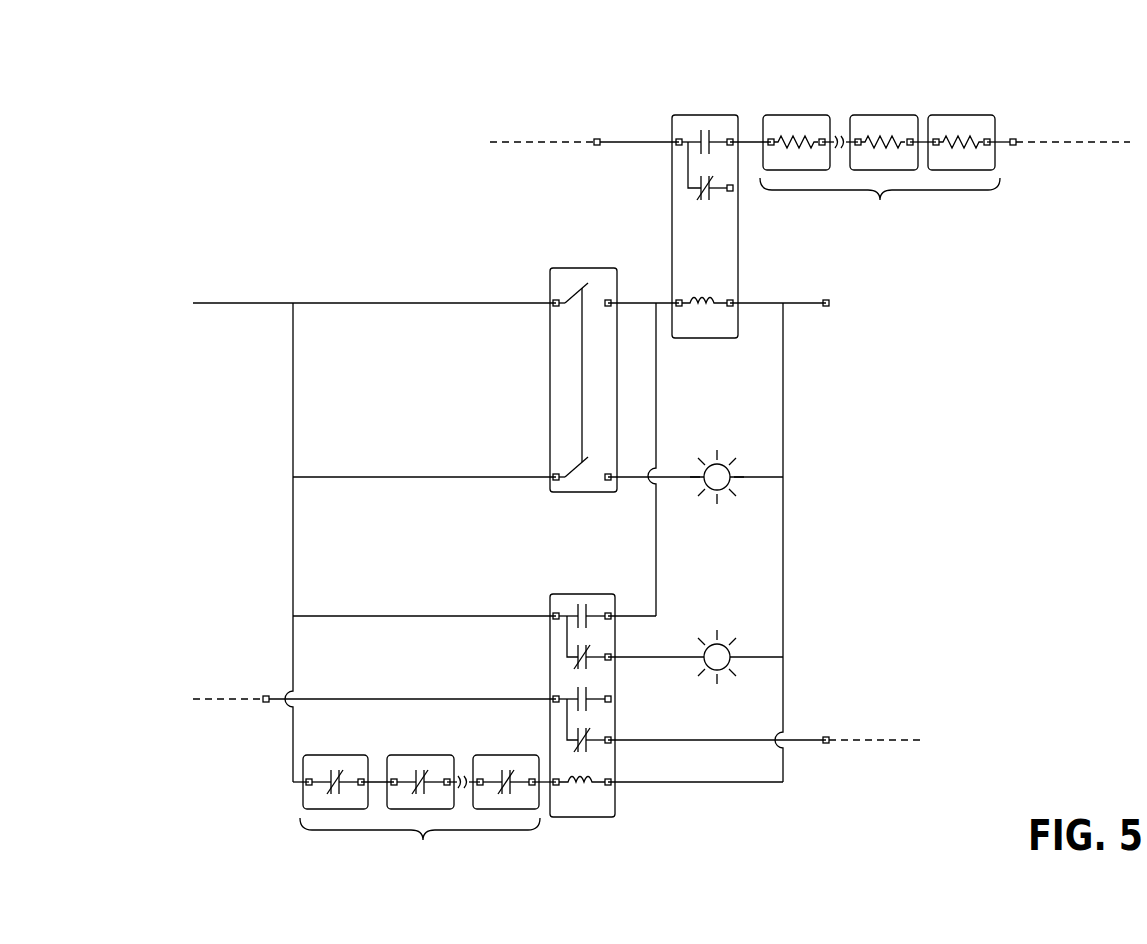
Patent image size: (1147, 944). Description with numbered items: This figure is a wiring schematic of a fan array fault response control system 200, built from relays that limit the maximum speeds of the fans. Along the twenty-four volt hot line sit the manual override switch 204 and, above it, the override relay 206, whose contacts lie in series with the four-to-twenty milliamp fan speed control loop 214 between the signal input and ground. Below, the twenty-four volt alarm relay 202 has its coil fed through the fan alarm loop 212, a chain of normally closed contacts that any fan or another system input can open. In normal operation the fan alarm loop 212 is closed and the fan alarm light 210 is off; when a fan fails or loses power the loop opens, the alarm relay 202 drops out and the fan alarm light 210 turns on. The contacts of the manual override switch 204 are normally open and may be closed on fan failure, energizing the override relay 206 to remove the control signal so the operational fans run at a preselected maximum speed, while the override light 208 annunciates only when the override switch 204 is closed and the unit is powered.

The fan array fault response control system 200 is at (428, 66).
The 24V alarm relay 202 is at (533, 606).
The manual override switch 204 is at (533, 289).
The override relay 206 is at (633, 121).
The override light 208 is at (759, 461).
The fan alarm light 210 is at (759, 641).
The fan alarm loop 212 is at (283, 797).
The fan speed control loop 214 is at (1020, 161).